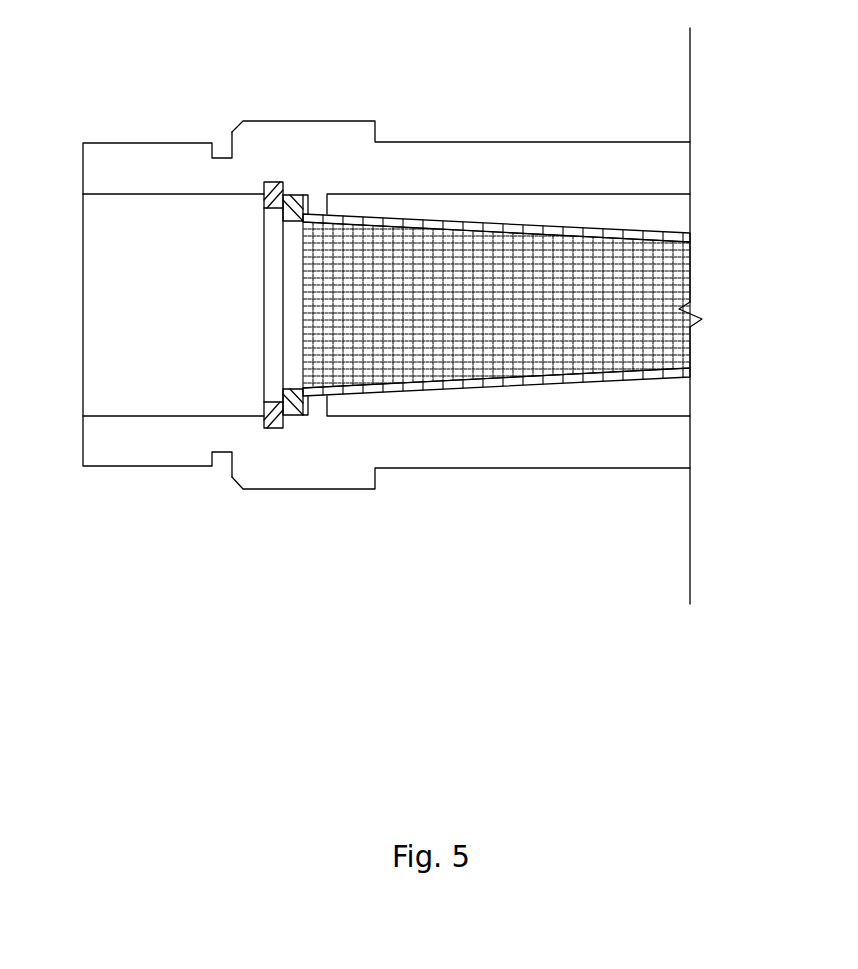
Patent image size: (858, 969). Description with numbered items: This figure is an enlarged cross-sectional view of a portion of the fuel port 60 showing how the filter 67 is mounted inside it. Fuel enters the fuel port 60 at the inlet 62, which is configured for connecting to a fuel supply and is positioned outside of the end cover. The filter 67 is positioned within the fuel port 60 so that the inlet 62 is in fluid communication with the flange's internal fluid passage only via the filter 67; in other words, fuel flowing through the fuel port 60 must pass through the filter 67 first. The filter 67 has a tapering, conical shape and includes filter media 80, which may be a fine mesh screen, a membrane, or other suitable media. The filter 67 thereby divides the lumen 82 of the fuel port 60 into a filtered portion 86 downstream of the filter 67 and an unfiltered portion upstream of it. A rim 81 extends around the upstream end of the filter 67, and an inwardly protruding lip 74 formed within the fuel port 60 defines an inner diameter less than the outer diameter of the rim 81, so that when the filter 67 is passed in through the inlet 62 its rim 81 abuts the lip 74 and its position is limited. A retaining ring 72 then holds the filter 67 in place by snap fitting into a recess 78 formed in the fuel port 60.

The fuel port 60 is at (440, 142).
The inlet 62 is at (102, 333).
The filter 67 is at (662, 260).
The retaining ring 72 is at (272, 345).
The lip 74 is at (328, 417).
The recess 78 is at (272, 182).
The filter media 80 is at (659, 342).
The rim 81 is at (295, 415).
The lumen 82 is at (166, 308).
The filtered portion 86 is at (664, 220).